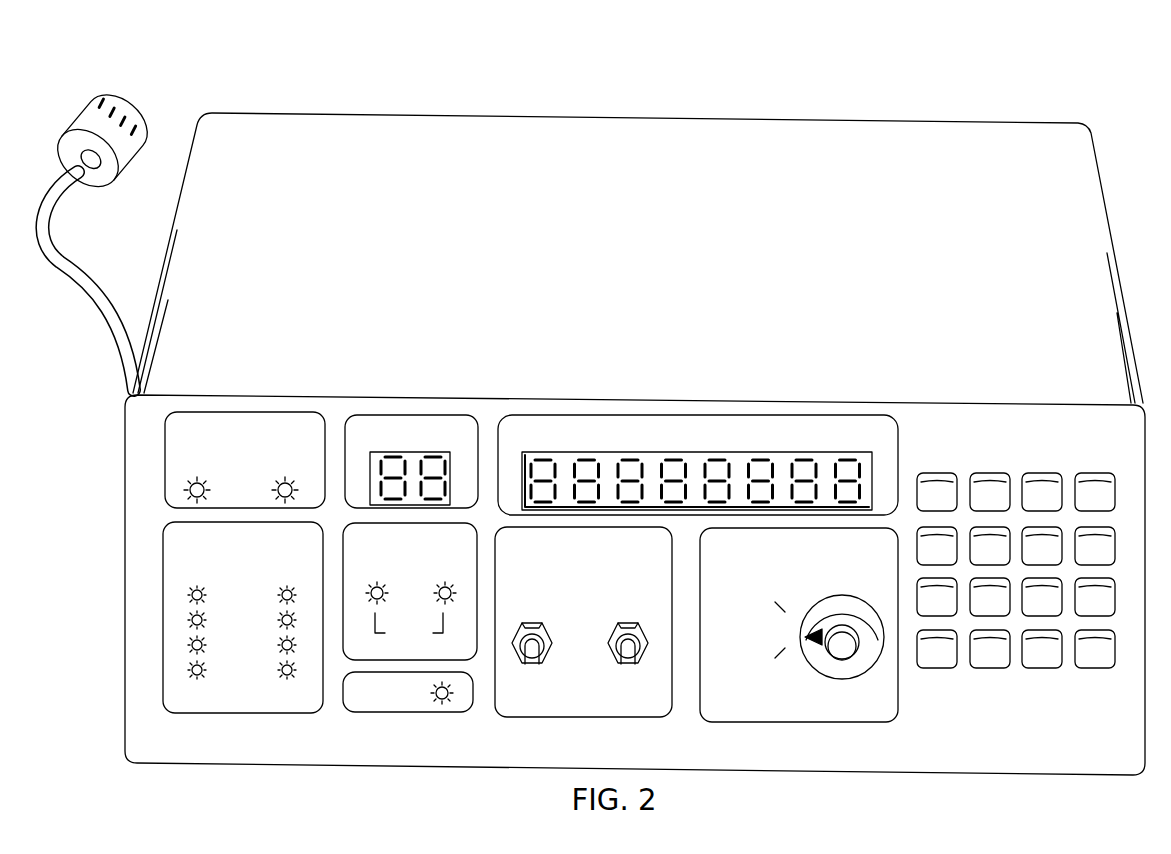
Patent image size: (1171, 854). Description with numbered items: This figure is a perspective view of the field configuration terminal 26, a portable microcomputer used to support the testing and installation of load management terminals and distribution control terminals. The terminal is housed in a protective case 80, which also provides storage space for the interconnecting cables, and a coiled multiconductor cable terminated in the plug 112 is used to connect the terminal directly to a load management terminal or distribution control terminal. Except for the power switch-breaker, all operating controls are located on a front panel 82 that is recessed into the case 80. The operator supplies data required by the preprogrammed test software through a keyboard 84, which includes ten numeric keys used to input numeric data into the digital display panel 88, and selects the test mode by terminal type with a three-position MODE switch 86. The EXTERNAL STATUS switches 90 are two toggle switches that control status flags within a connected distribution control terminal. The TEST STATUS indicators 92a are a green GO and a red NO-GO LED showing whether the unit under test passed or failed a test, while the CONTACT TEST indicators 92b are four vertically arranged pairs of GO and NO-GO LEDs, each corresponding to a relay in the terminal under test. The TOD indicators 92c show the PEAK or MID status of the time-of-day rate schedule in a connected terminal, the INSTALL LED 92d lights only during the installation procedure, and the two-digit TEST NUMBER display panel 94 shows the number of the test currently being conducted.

The field configuration terminal 26 is at (594, 107).
The protective case 80 is at (235, 112).
The front panel 82 is at (131, 422).
The keyboard 84 is at (1017, 472).
The MODE switch 86 is at (842, 670).
The digital display panel 88 is at (632, 437).
The EXTERNAL STATUS switches 90 is at (588, 653).
The TEST STATUS indicators 92a is at (303, 427).
The CONTACT TEST indicators 92b is at (163, 637).
The TOD indicators 92c is at (430, 545).
The INSTALL LED 92d is at (463, 697).
The TEST NUMBER display panel 94 is at (415, 418).
The plug 112 is at (93, 117).